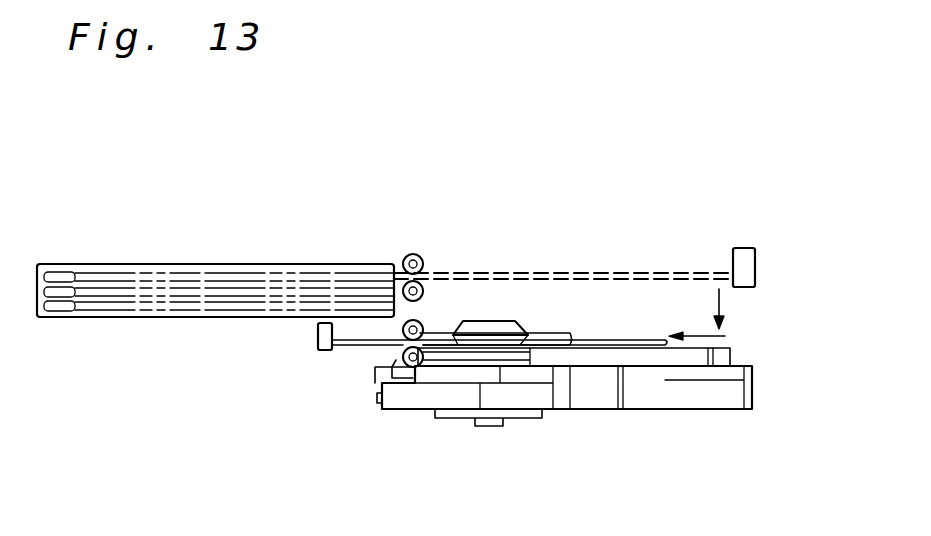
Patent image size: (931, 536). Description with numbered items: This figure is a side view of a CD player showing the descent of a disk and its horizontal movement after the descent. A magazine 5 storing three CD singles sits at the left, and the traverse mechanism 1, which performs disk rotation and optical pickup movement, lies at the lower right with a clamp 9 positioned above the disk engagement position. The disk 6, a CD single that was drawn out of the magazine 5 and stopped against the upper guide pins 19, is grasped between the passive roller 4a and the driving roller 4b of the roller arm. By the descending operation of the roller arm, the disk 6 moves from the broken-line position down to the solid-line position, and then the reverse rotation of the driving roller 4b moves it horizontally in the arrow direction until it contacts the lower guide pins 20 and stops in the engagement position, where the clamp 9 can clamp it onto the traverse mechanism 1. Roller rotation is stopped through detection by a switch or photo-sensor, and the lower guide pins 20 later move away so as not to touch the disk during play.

The traverse mechanism 1 is at (413, 396).
The passive roller 4a is at (409, 254).
The driving roller 4b is at (421, 284).
The magazine 5 is at (118, 263).
The first disk 6 is at (633, 272).
The clamp 9 is at (515, 321).
The upper guide pins 19 is at (750, 252).
The lower guide pins 20 is at (317, 350).